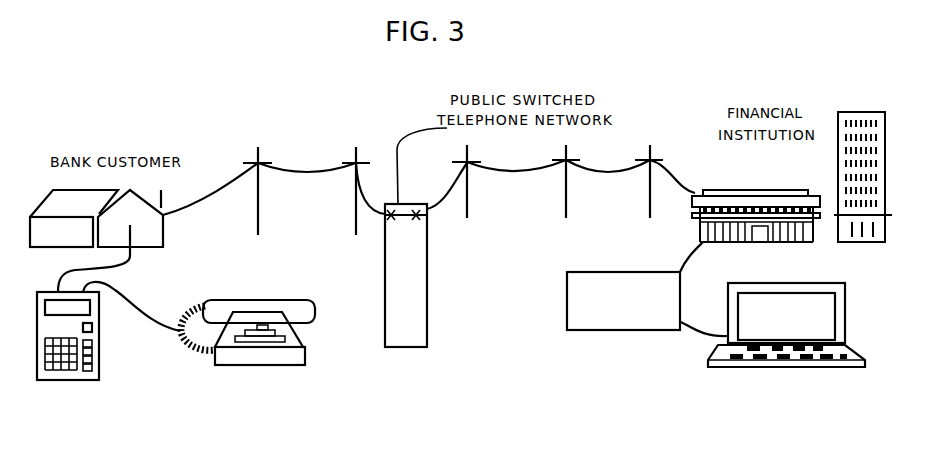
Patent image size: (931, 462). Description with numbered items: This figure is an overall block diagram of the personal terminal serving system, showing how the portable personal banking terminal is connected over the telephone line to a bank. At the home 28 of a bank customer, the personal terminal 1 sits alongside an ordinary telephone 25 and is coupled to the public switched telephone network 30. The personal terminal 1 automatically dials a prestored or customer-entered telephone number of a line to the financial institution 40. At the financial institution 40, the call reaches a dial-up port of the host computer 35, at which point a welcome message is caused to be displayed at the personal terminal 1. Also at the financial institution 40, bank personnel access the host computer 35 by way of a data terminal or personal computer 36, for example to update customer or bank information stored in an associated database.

The personal terminal 1 is at (58, 380).
The telephone 25 is at (303, 340).
The home 28 is at (53, 203).
The public switched telephone network 30 is at (427, 310).
The host computer 35 is at (567, 288).
The data terminal or personal computer 36 is at (818, 370).
The financial institution 40 is at (740, 193).